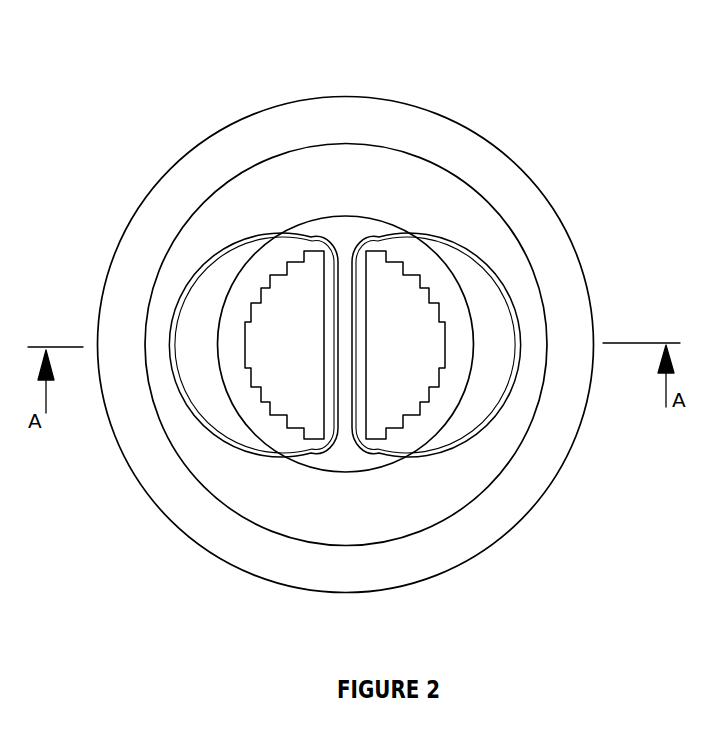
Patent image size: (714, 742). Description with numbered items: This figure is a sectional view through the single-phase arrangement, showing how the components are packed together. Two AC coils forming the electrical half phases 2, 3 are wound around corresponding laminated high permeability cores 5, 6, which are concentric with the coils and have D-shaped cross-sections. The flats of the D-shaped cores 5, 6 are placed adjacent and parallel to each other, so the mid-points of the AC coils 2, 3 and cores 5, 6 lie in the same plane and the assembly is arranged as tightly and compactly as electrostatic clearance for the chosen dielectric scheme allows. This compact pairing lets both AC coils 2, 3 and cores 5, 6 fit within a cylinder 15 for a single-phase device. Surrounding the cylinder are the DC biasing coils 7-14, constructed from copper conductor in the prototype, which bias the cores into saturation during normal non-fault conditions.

The electrical half phase 2 is at (308, 233).
The electrical half phase 3 is at (382, 232).
The laminated high permeability core 5 is at (268, 330).
The laminated high permeability core 6 is at (403, 312).
The cylinder 15 is at (248, 262).
The DC biasing coils 7-14 is at (482, 552).